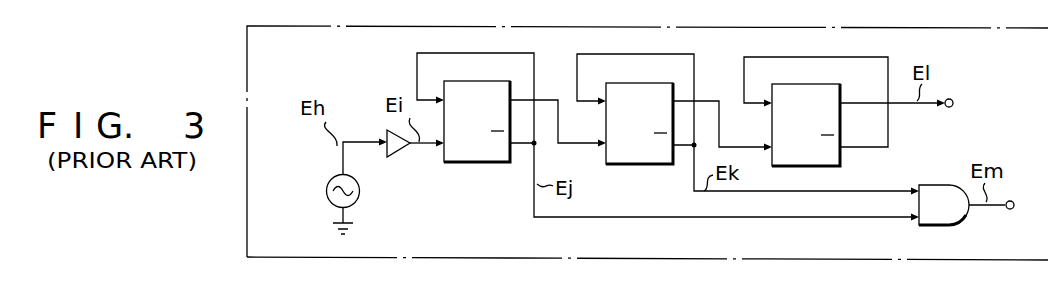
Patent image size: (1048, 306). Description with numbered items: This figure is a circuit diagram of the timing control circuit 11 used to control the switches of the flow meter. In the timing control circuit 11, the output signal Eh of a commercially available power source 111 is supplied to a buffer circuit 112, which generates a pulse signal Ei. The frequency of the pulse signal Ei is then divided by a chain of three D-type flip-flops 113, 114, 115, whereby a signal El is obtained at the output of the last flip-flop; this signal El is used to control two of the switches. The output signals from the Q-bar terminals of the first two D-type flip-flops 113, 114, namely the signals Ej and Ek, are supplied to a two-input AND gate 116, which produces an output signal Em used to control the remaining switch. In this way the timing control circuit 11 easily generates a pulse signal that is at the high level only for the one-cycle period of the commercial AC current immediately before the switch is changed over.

The timing control circuit 11 is at (246, 233).
The commercially available power source 111 is at (329, 200).
The buffer circuit 112 is at (396, 150).
The D-type flip-flop 113 is at (486, 162).
The D-type flip-flop 114 is at (646, 164).
The D-type flip-flop 115 is at (822, 158).
The two-input AND gate 116 is at (948, 218).